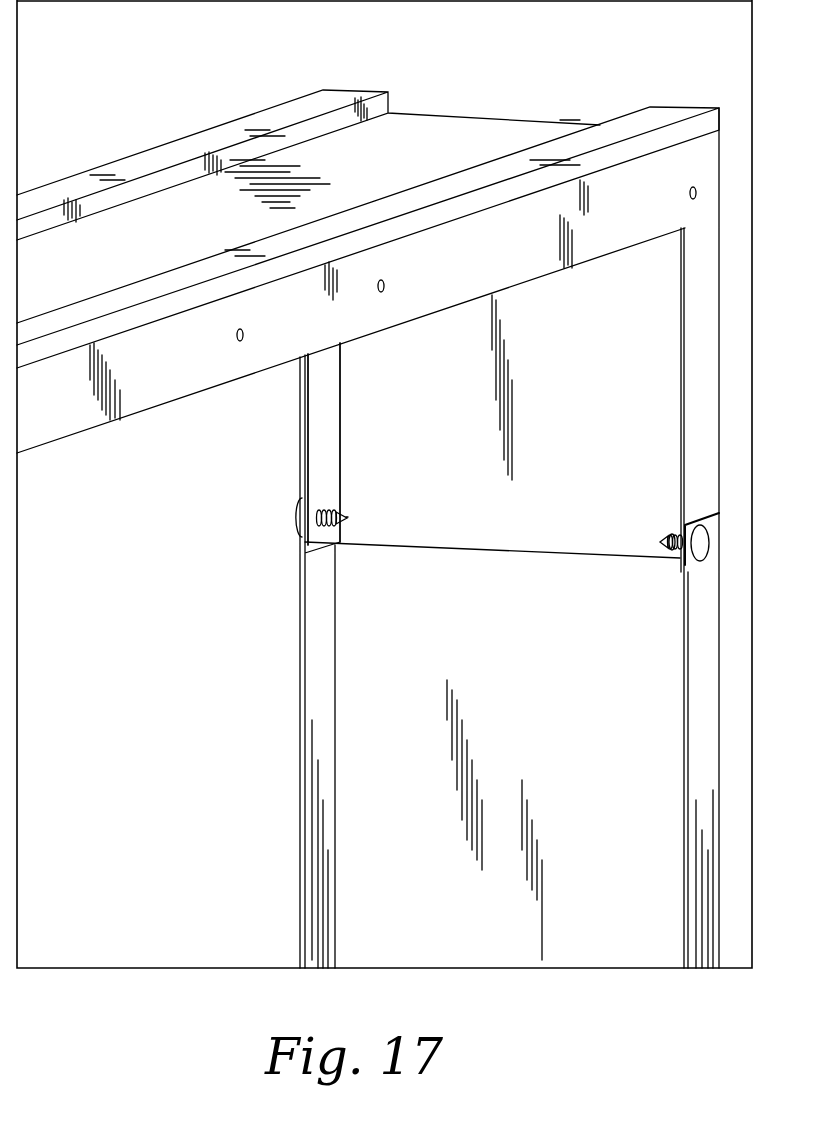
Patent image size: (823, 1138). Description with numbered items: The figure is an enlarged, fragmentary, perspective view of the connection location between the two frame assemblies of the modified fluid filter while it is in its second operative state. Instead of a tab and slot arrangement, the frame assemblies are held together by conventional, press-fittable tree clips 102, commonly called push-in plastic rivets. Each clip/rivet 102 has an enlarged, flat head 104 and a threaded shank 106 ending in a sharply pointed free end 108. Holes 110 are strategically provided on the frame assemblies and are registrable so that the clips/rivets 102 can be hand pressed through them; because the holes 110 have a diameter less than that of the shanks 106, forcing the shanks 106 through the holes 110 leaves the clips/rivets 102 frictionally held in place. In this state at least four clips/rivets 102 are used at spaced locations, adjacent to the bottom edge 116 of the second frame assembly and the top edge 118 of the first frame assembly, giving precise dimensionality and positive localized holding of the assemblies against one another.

The bottom edge 116 is at (373, 543).
The holes 110 is at (241, 342).
The tree clips 102 is at (330, 510).
The pointed free end 108 is at (348, 519).
The threaded shank 106 is at (672, 535).
The flat head 104 is at (712, 513).
The top edge 118 is at (720, 512).